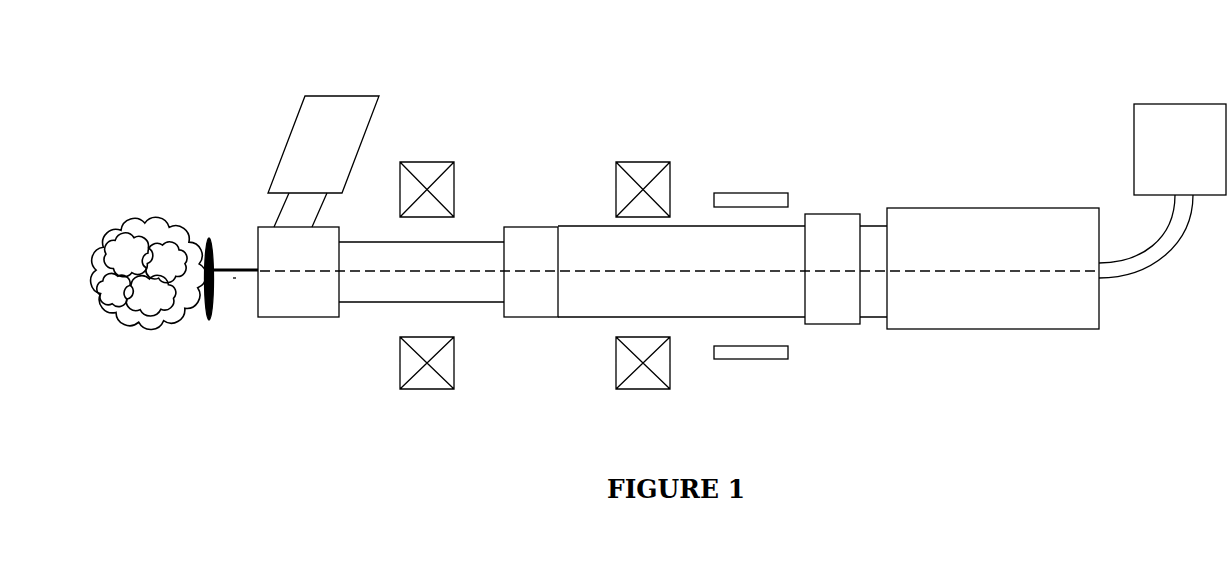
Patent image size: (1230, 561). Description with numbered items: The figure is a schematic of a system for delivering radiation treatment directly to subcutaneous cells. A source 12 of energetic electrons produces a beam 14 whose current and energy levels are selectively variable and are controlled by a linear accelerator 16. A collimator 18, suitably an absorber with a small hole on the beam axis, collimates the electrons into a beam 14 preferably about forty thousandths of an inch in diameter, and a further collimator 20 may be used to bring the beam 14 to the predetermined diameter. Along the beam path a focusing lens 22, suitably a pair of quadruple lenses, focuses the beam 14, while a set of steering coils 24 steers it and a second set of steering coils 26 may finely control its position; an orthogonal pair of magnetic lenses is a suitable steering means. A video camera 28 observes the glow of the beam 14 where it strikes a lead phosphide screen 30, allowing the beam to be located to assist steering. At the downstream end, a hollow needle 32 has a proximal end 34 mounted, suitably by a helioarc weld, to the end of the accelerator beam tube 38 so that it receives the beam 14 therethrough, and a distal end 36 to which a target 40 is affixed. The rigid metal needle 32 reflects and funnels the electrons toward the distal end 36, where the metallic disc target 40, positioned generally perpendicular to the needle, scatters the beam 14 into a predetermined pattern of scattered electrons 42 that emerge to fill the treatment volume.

The source of energetic electrons 12 is at (1122, 145).
The beam 14 is at (357, 274).
The linear accelerator 16 is at (970, 338).
The collimator 18 is at (833, 331).
The collimator 20 is at (530, 332).
The focusing lens 22 is at (752, 368).
The set of steering coils 24 is at (645, 147).
The second set of steering coils 26 is at (422, 145).
The video camera 28 is at (352, 72).
The lead phosphide screen 30 is at (298, 308).
The hollow needle 32 is at (235, 289).
The proximal end 34 is at (257, 268).
The distal end 36 is at (216, 263).
The accelerator beam tube 38 is at (348, 304).
The target 40 is at (205, 333).
The scattered electrons 42 is at (157, 208).